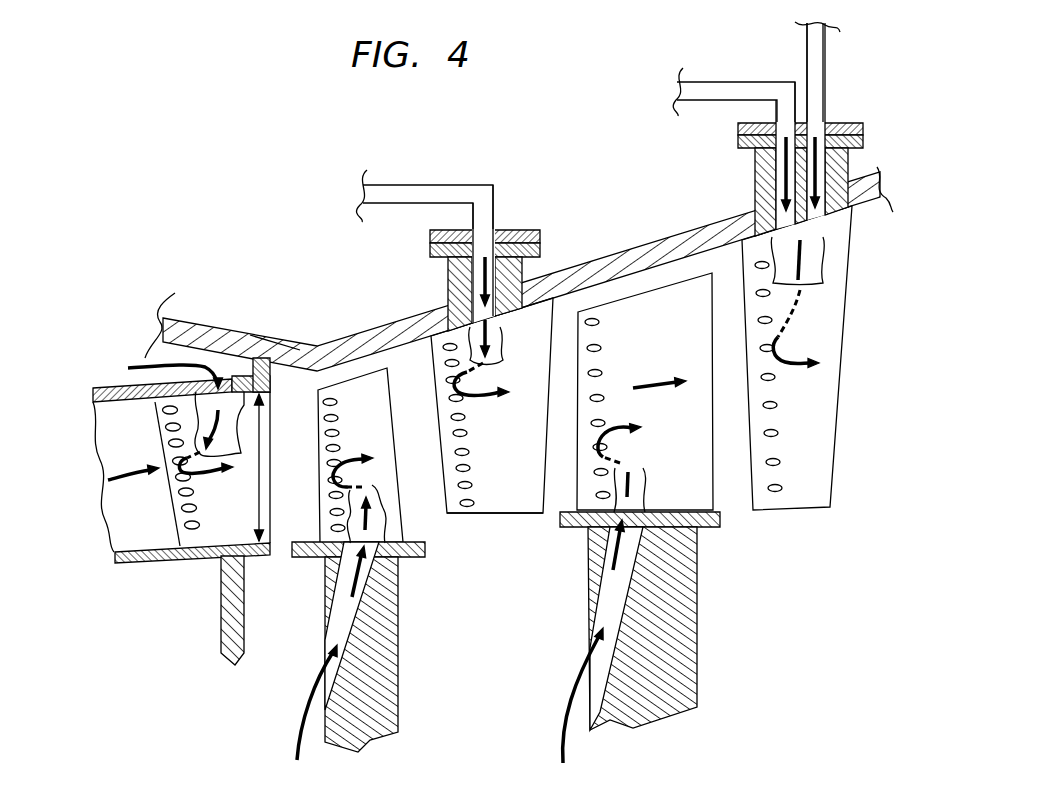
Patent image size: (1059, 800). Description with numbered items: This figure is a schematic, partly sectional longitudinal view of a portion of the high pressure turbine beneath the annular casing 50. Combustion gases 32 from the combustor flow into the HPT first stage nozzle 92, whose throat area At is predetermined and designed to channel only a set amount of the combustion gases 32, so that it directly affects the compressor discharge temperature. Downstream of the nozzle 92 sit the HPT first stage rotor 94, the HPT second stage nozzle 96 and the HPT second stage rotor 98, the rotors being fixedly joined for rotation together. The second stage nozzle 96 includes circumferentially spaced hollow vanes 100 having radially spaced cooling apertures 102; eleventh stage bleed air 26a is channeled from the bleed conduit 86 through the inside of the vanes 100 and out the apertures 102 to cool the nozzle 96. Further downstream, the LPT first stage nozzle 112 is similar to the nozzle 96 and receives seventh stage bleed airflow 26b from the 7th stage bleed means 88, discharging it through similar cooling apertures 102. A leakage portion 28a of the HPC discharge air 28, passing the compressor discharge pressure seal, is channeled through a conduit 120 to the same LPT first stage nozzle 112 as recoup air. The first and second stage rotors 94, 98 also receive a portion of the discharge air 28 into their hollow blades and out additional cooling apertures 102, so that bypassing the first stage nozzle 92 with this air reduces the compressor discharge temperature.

The HPC discharge air 28 is at (212, 320).
The leakage airflow portion 28a is at (840, 165).
The annular casing 50 is at (267, 342).
The combustion gases 32 is at (108, 482).
The HPT first stage nozzle 92 is at (205, 557).
The throat area At is at (256, 489).
The HPT first stage rotor 94 is at (408, 592).
The HPT second stage nozzle 96 is at (556, 266).
The hollow vanes 100 is at (510, 514).
The HPT second stage rotor 98 is at (582, 570).
The LPT first stage nozzle 112 is at (840, 330).
The cooling apertures 102 is at (175, 490).
The bleed conduit 86 is at (428, 185).
The bleed air portion 26a is at (450, 274).
The 7th stage bleed means 88 is at (718, 82).
The conduit 120 is at (825, 77).
The 7th stage bleed airflow 26b is at (757, 183).